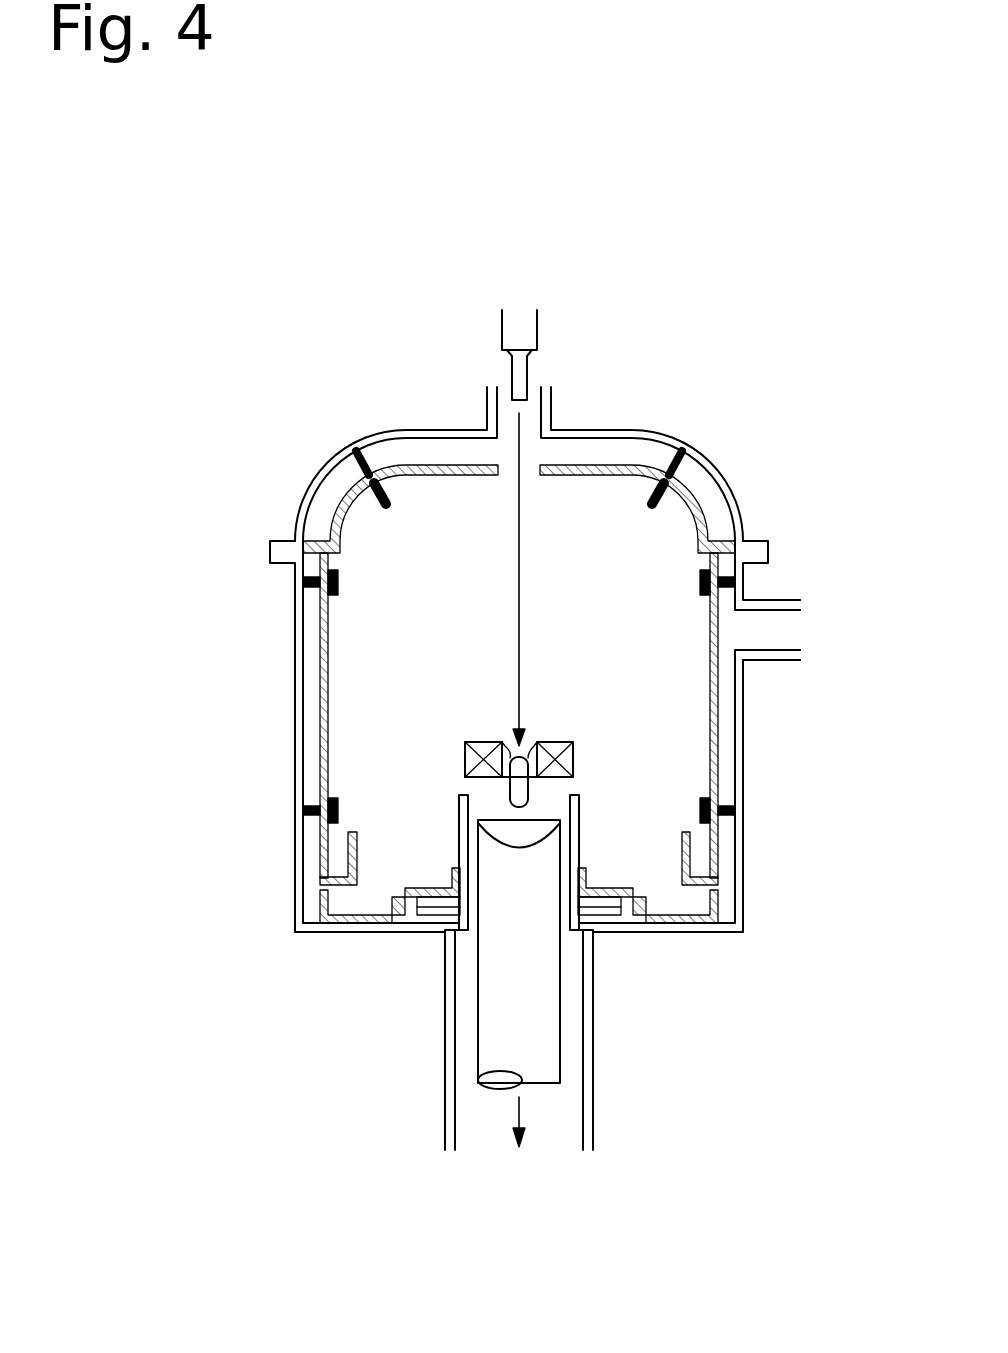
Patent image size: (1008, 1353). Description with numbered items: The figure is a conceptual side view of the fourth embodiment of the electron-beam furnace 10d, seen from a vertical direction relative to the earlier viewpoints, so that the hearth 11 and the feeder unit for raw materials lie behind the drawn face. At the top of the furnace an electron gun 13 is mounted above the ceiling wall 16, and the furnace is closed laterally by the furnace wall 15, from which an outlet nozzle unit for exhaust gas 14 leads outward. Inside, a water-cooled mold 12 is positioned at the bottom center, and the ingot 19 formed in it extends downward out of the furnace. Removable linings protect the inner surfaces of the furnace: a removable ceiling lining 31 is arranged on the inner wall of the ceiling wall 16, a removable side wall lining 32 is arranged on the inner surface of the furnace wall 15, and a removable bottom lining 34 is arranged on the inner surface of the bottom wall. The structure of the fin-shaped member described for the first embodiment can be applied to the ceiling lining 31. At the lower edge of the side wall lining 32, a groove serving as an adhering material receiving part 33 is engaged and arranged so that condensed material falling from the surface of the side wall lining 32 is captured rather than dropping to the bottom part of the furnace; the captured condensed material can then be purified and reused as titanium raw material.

The electron-beam furnace 10d is at (674, 396).
The hearth 11 is at (520, 742).
The water-cooled mold 12 is at (571, 838).
The electron gun 13 is at (539, 325).
The outlet nozzle unit for exhaust gas 14 is at (783, 637).
The furnace wall 15 is at (740, 737).
The ceiling wall 16 is at (703, 463).
The ingot 19 is at (536, 1014).
The ceiling lining 31 is at (428, 465).
The side wall lining 32 is at (320, 653).
The adhering material receiving part 33 is at (352, 862).
The bottom lining 34 is at (360, 932).